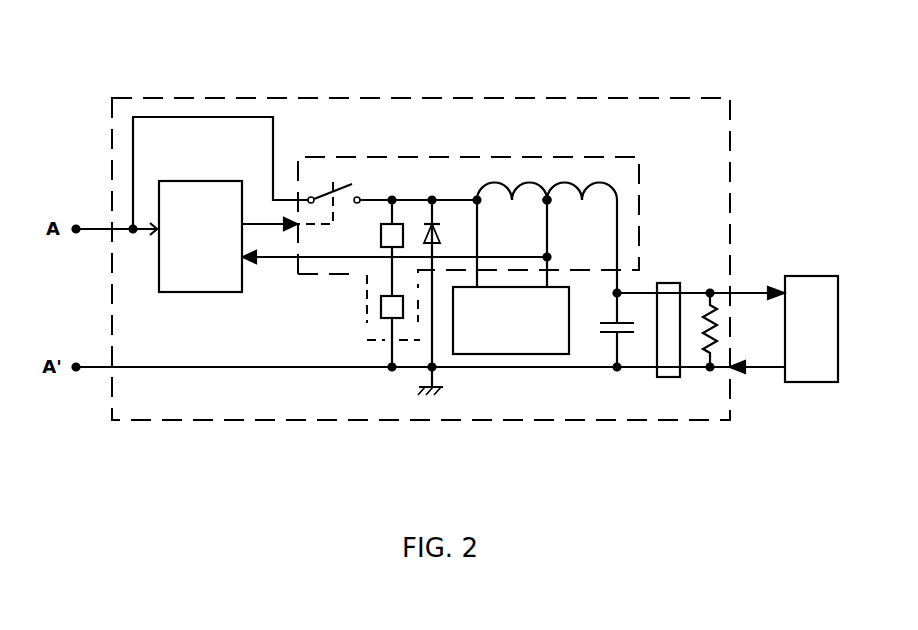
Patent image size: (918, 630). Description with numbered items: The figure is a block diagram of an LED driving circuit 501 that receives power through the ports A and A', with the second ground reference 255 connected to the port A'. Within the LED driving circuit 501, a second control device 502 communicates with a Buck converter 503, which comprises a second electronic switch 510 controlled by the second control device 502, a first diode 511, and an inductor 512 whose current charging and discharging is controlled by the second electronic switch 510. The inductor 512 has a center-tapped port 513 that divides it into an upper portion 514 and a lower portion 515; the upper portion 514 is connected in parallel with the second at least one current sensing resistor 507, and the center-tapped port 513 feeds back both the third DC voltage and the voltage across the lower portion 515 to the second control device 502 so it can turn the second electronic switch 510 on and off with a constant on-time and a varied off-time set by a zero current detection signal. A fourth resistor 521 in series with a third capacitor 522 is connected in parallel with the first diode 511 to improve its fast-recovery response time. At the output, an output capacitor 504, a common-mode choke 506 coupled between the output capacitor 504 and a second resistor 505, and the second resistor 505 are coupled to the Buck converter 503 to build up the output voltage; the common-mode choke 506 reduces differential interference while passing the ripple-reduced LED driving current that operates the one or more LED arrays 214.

The LED driving circuit 501 is at (210, 424).
The second control device 502 is at (195, 180).
The Buck converter 503 is at (429, 150).
The output capacitor 504 is at (609, 337).
The second resistor 505 is at (710, 353).
The common-mode choke 506 is at (668, 285).
The second at least one current sensing resistor 507 is at (518, 357).
The second electronic switch 510 is at (333, 192).
The first diode 511 is at (431, 226).
The inductor 512 is at (547, 134).
The center-tapped port 513 is at (546, 197).
The upper portion 514 is at (484, 186).
The lower portion 515 is at (607, 188).
The fourth resistor 521 is at (383, 231).
The third capacitor 522 is at (390, 318).
The second ground reference 255 is at (430, 391).
The LED arrays 214 is at (801, 277).